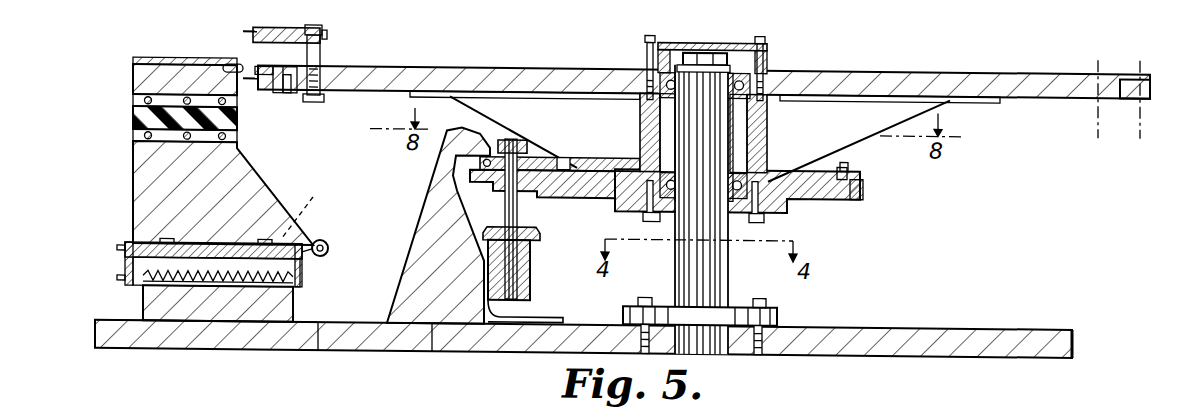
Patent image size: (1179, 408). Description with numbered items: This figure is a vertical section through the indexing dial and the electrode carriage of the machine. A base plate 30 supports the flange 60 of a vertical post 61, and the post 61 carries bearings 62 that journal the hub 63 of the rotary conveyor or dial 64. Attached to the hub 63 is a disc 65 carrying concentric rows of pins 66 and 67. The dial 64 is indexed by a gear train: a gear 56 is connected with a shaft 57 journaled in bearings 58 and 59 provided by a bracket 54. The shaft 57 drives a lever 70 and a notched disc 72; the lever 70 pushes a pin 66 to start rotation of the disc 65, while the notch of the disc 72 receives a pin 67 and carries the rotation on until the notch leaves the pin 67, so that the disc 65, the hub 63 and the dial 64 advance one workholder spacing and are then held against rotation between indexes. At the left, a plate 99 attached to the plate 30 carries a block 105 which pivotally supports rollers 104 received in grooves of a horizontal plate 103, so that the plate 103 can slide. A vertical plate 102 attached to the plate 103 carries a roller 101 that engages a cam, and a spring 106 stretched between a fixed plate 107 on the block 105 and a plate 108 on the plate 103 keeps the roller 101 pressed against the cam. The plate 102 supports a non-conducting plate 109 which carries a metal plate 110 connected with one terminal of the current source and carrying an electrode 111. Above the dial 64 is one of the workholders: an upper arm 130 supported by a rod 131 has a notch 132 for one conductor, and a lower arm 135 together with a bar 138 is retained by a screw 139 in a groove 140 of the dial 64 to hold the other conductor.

The plate 30 is at (1024, 334).
The bracket 54 is at (432, 199).
The gear 56 is at (541, 237).
The shaft 57 is at (505, 206).
The bearing 58 is at (529, 287).
The bearing 59 is at (527, 158).
The flange 60 is at (773, 315).
The post 61 is at (722, 274).
The bearings 62 is at (745, 84).
The hub 63 is at (757, 134).
The rotary conveyor or dial 64 is at (923, 78).
The disc 65 is at (824, 198).
The pins 66 is at (574, 172).
The pins 67 is at (858, 168).
The lever 70 is at (546, 167).
The disc 72 is at (452, 180).
The plate 99 is at (175, 344).
The roller 101 is at (329, 250).
The vertical plate 102 is at (258, 174).
The horizontal plate 103 is at (185, 252).
The rollers 104 is at (313, 206).
The block 105 is at (291, 308).
The spring 106 is at (232, 284).
The fixed plate 107 is at (305, 270).
The plate 108 is at (124, 267).
The non-conducting plate 109 is at (226, 133).
The metal plate 110 is at (137, 84).
The electrode 111 is at (235, 66).
The upper arm 130 is at (324, 37).
The rod 131 is at (321, 52).
The notch 132 is at (266, 33).
The lower arm 135 is at (267, 90).
The bar 138 is at (285, 74).
The screw 139 is at (270, 71).
The groove 140 is at (288, 86).